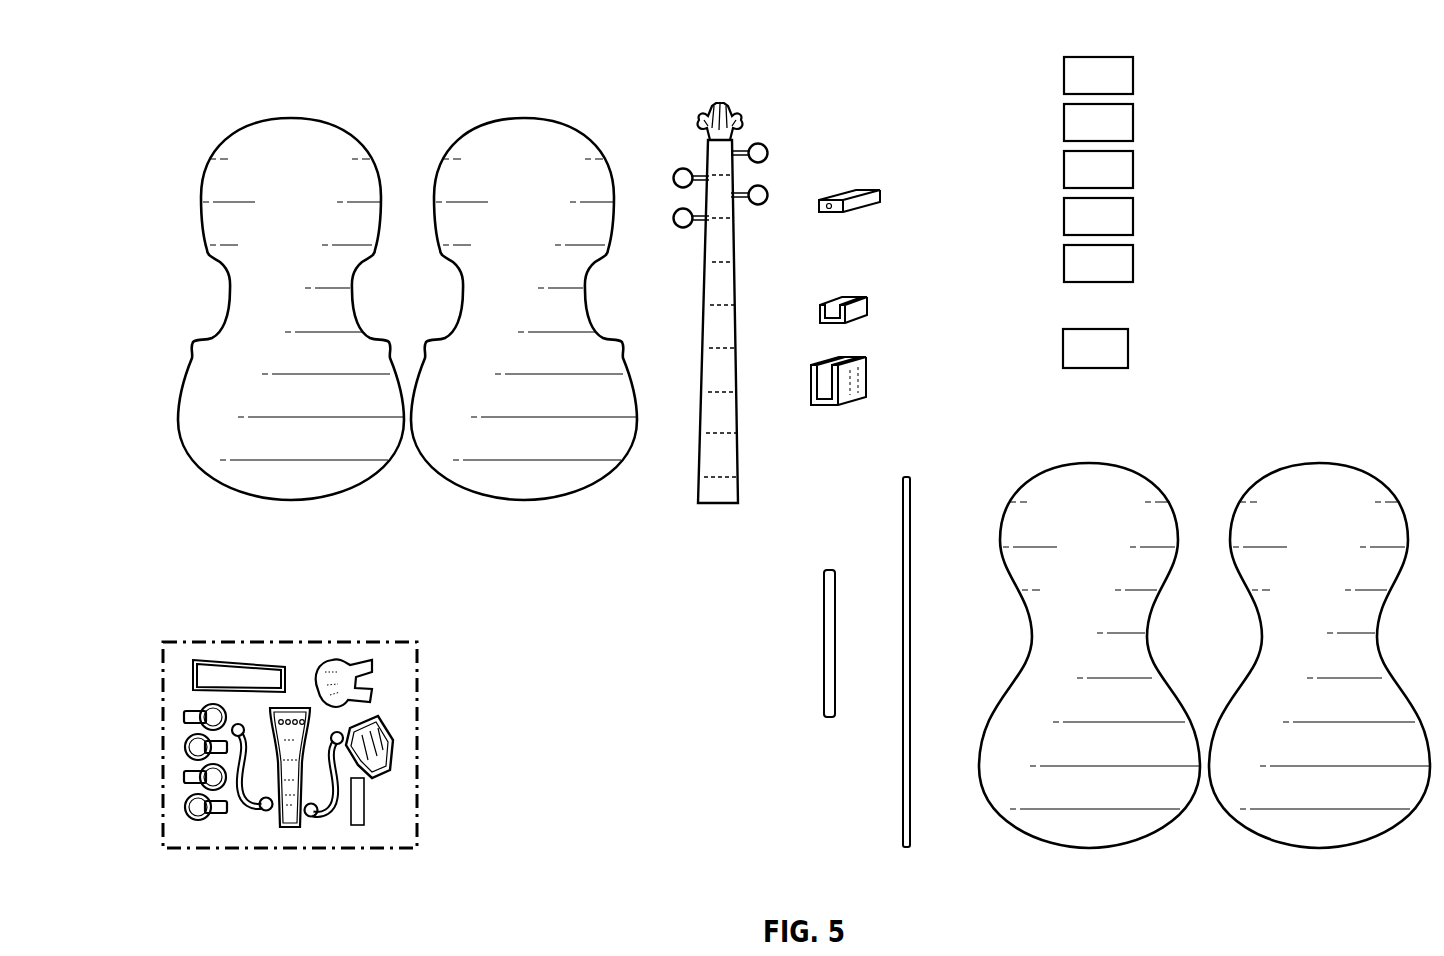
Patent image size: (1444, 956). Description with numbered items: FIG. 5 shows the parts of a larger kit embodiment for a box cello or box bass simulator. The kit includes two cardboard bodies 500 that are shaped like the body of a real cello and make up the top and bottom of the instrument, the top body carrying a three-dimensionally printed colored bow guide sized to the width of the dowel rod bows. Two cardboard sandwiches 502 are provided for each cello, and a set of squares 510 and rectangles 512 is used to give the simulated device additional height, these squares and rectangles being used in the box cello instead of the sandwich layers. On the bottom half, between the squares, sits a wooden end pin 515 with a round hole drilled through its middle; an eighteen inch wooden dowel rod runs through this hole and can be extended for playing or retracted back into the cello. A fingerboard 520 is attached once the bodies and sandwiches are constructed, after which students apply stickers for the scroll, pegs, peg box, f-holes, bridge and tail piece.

The cardboard bodies 500 is at (195, 110).
The cardboard sandwiches 502 is at (1012, 503).
The squares 510 is at (1133, 263).
The rectangles 512 is at (1128, 348).
The end pin 515 is at (824, 598).
The neck 520 is at (707, 311).